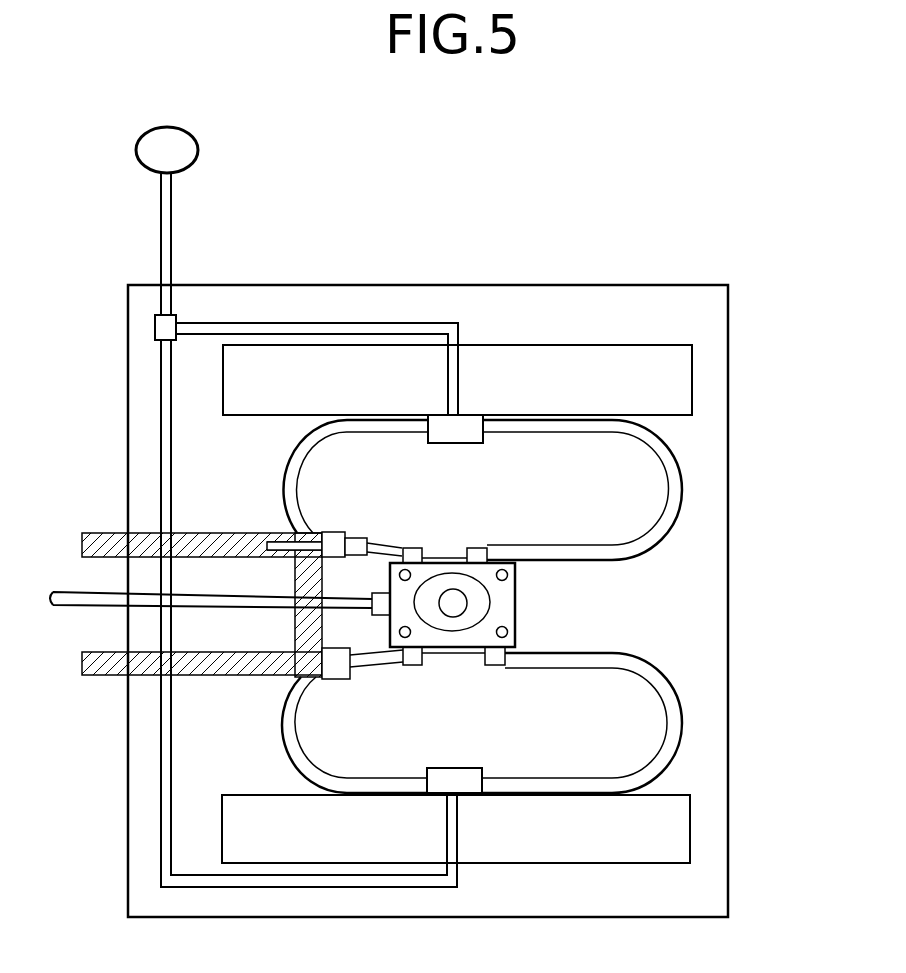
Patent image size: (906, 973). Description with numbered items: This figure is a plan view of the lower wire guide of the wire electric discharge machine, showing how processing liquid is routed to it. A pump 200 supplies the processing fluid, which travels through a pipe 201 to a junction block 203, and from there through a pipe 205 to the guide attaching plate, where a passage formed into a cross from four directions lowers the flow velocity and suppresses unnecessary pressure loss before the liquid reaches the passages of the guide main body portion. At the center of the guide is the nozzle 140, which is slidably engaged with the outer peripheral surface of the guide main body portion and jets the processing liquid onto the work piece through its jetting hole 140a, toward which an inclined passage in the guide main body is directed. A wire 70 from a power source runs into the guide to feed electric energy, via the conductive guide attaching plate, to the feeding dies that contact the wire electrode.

The wire 70 is at (60, 612).
The nozzle 140 is at (482, 592).
The jetting hole 140a is at (457, 603).
The pump 200 is at (198, 150).
The pipe 201 is at (372, 322).
The junction block 203 is at (468, 420).
The pipe 205 is at (683, 488).